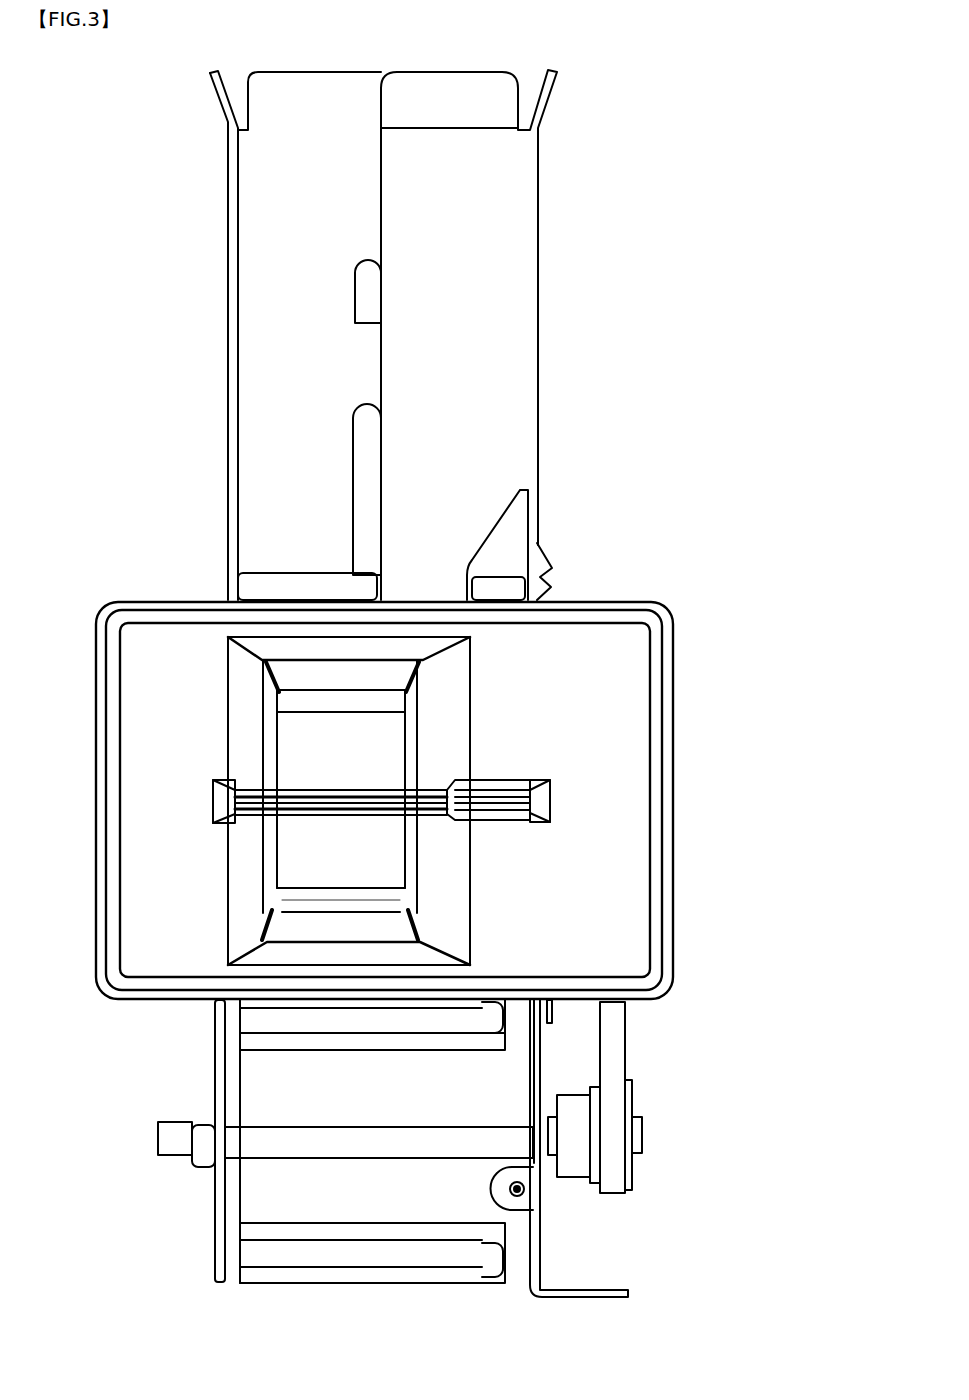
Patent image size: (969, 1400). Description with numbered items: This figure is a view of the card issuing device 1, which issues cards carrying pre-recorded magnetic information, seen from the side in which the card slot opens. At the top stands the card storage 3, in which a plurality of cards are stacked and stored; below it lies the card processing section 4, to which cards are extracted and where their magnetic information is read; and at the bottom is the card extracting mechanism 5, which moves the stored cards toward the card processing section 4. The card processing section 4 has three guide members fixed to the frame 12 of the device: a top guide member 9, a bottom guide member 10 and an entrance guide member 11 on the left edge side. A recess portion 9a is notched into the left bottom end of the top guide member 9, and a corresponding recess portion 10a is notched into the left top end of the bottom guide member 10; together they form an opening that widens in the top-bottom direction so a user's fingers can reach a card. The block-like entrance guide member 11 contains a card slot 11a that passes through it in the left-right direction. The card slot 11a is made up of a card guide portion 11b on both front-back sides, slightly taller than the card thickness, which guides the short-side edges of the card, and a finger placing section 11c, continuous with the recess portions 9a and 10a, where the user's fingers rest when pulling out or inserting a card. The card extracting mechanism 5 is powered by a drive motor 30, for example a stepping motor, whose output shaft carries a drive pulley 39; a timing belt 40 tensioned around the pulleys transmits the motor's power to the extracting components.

The card issuing device 1 is at (673, 134).
The card storage 3 is at (538, 325).
The card processing section 4 is at (662, 602).
The card extracting mechanism 5 is at (681, 1186).
The top guide member 9 is at (353, 768).
The recess portion 9a is at (378, 748).
The bottom guide member 10 is at (358, 854).
The recess portion 10a is at (380, 866).
The entrance guide member 11 is at (678, 738).
The card slot 11a is at (298, 740).
The card guide portion 11b is at (233, 820).
The finger placing section 11c is at (293, 862).
The frame 12 is at (213, 1040).
The drive motor 30 is at (365, 1285).
The drive pulley 39 is at (632, 1095).
The timing belt 40 is at (627, 1040).